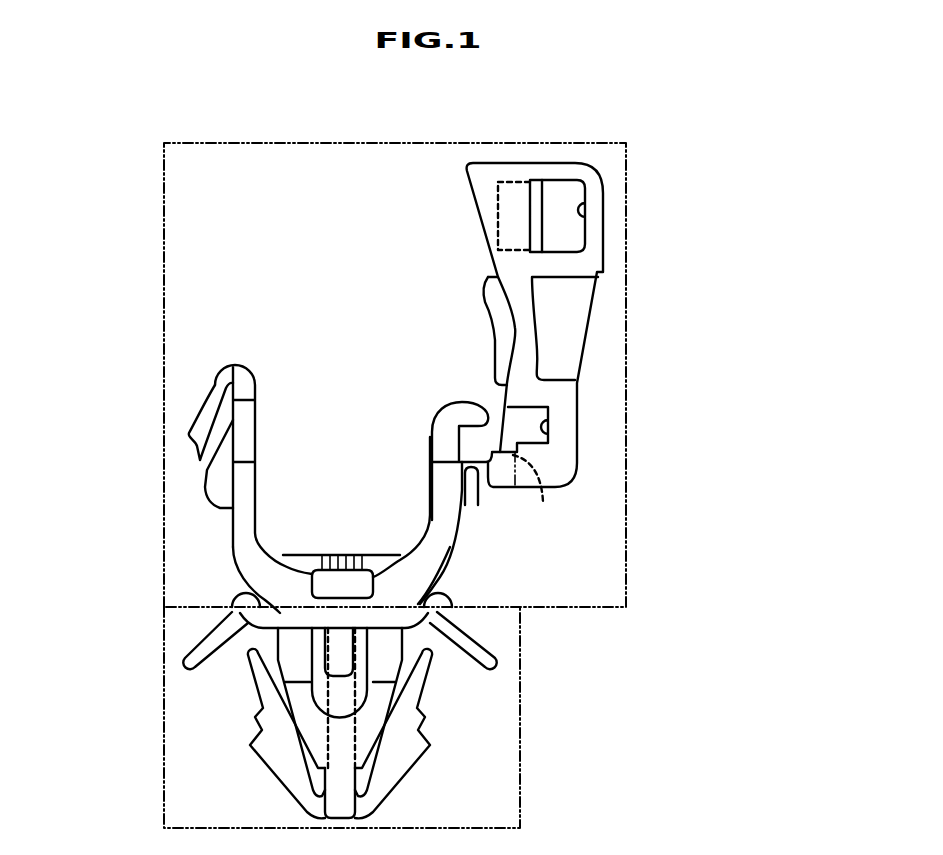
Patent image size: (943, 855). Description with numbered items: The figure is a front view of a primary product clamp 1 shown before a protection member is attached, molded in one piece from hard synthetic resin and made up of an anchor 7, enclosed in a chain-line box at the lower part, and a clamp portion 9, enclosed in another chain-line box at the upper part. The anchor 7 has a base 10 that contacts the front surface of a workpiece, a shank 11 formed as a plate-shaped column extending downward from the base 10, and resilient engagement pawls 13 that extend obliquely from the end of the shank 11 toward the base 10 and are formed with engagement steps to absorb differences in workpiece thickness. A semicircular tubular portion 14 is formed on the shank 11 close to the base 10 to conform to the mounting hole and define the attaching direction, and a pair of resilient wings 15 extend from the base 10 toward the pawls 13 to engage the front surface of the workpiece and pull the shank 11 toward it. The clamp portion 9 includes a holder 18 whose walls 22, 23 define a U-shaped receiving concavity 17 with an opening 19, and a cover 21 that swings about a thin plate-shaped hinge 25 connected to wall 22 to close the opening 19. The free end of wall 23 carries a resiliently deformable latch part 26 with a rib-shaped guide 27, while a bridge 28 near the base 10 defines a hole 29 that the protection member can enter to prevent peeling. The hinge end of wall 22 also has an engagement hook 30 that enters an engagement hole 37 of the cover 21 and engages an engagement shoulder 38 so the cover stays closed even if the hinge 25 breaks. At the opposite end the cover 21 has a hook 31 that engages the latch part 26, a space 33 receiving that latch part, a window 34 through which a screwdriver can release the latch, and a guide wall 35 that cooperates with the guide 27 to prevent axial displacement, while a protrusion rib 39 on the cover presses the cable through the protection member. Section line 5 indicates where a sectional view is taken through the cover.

The primary product clamp 1 is at (711, 241).
The section line 5- 5 is at (567, 337).
The anchor 7 is at (590, 650).
The clamp portion 9 is at (636, 497).
The base 10 is at (298, 628).
The shank 11 is at (342, 783).
The resilient engagement pawls 13 is at (412, 748).
The semicircular tubular portion 14 is at (362, 693).
The resilient wings 15 is at (477, 650).
The receiving concavity 17 is at (357, 496).
The holder 18 is at (464, 545).
The opening 19 is at (326, 402).
The cover 21 is at (594, 368).
The wall 22 is at (442, 517).
The wall 23 is at (255, 543).
The hinge 25 is at (478, 505).
The latch part 26 is at (200, 427).
The guide 27 is at (218, 487).
The bridge 28 is at (327, 560).
The hole 29 is at (350, 588).
The engagement hook 30 is at (476, 413).
The hook 31 is at (497, 187).
The space 33 is at (553, 208).
The window 34 is at (584, 209).
The guide wall 35 is at (512, 233).
The engagement hole 37 is at (549, 426).
The engagement shoulder 38 is at (547, 493).
The protrusion rib 39 is at (488, 313).